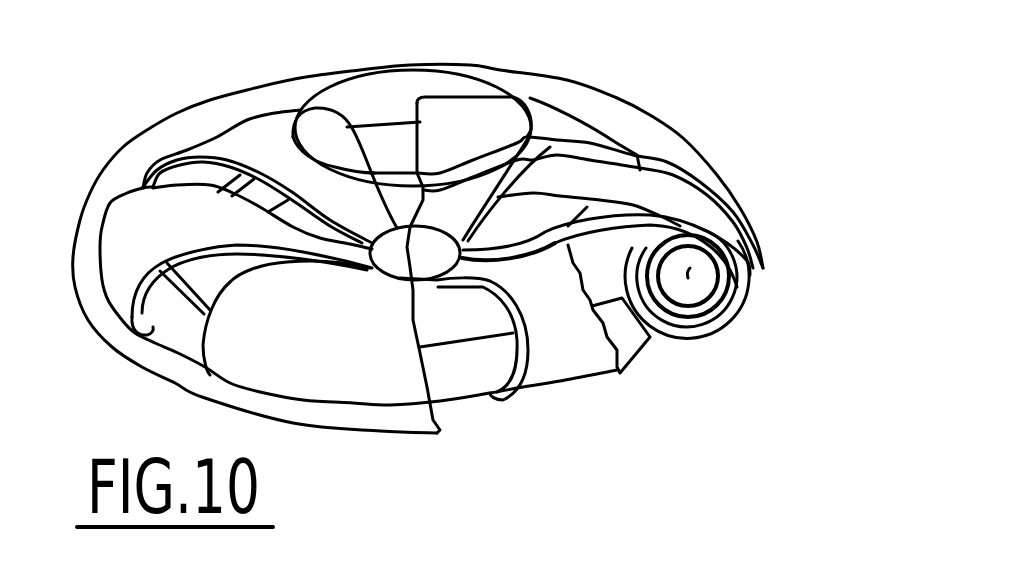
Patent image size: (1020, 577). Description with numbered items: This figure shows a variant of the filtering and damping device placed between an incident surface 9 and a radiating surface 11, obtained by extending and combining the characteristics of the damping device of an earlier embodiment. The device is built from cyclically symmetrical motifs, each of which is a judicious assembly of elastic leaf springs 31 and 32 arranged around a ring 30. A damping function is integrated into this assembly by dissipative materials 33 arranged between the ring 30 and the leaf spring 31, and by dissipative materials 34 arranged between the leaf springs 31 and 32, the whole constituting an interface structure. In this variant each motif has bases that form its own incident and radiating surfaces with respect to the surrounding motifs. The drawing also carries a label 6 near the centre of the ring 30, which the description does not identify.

The axis of rotation 6 is at (718, 290).
The impeller 9 is at (353, 432).
The hub opening 11 is at (391, 94).
The bearing boss 30 is at (687, 266).
The support rib 31 is at (558, 243).
The cylindrical wall 32 is at (637, 167).
The annular groove 33 is at (728, 262).
The annular flange 34 is at (745, 255).